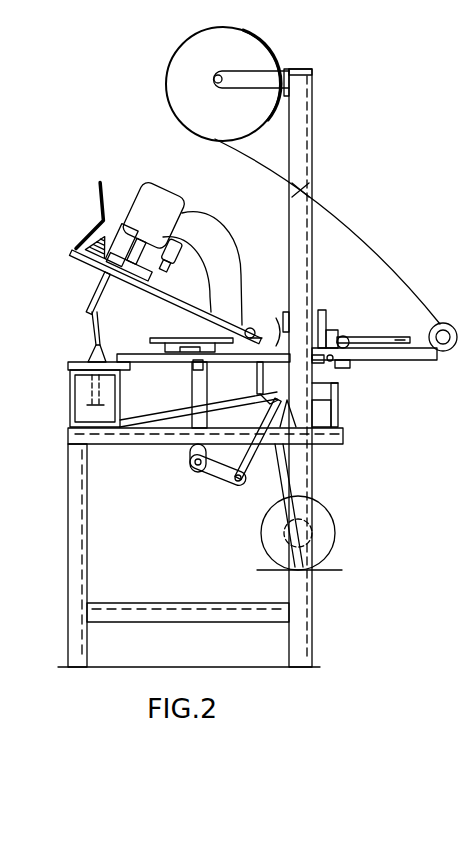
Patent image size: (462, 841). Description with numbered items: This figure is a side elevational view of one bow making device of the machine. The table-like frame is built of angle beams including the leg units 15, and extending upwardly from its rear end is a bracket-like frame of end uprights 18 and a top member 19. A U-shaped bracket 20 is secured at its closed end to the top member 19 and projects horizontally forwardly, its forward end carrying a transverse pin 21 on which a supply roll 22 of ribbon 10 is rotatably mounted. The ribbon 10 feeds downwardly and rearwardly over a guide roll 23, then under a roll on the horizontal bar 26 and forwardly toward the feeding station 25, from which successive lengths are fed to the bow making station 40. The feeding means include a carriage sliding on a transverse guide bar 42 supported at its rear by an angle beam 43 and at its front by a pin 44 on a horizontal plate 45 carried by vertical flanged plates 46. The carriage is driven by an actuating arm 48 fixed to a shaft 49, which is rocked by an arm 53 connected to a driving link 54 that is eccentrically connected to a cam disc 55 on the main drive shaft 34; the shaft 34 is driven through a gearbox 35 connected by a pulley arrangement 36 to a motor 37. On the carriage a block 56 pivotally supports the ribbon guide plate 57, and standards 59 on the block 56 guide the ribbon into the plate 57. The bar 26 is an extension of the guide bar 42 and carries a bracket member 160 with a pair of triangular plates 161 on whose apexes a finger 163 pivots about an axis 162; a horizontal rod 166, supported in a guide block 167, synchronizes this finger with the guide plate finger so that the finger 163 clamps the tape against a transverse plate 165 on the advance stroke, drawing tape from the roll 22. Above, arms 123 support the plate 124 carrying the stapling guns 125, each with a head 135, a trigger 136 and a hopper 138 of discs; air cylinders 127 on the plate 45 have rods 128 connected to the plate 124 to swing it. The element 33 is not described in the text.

The ribbon 10 is at (429, 334).
The leg units 15 is at (70, 555).
The end uprights 18 is at (300, 131).
The top member 19 is at (312, 69).
The U-shaped bracket 20 is at (262, 72).
The transverse pin 21 is at (216, 75).
The supply roll 22 is at (247, 44).
The guide roll 23 is at (312, 190).
The feeding station 25 is at (152, 341).
The horizontal bar 26 is at (406, 360).
The bracket 33 is at (326, 389).
The drive shaft 34 is at (258, 402).
The gearbox 35 is at (338, 412).
The pulley arrangement 36 is at (276, 478).
The motor 37 is at (325, 526).
The bow making station 40 is at (75, 370).
The guide bar 42 is at (148, 363).
The angle beam 43 is at (236, 385).
The pin 44 is at (104, 348).
The horizontal plate 45 is at (70, 364).
The vertical flanged plates 46 is at (70, 390).
The actuating arm 48 is at (196, 388).
The shaft 49 is at (194, 470).
The arm 53 is at (218, 482).
The driving link 54 is at (312, 468).
The cam disc 55 is at (348, 366).
The block 56 is at (240, 395).
The ribbon guide plate 57 is at (158, 340).
The standards 59 is at (236, 314).
The arm 123 is at (272, 321).
The plate 124 is at (156, 310).
The stapling gun 125 is at (210, 220).
The air cylinder 127 is at (93, 315).
The rod 128 is at (100, 292).
The head 135 is at (160, 197).
The trigger 136 is at (176, 262).
The hopper 138 is at (108, 208).
The bracket member 160 is at (292, 318).
The right angled triangularly shaped plates 161 is at (342, 337).
The axis 162 is at (332, 331).
The finger 163 is at (322, 322).
The transverse plate 165 is at (332, 360).
The horizontal rod 166 is at (397, 337).
The guide block 167 is at (346, 338).